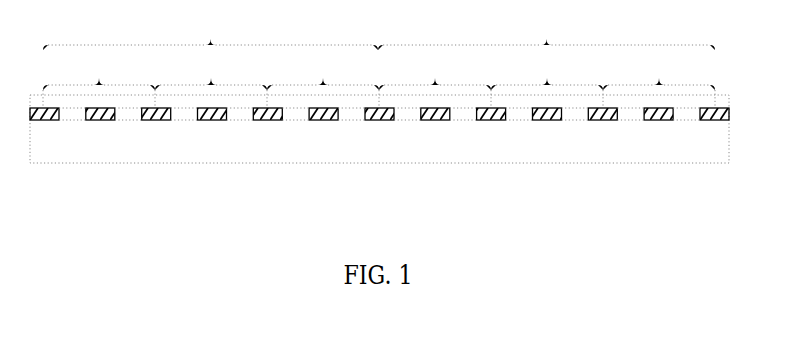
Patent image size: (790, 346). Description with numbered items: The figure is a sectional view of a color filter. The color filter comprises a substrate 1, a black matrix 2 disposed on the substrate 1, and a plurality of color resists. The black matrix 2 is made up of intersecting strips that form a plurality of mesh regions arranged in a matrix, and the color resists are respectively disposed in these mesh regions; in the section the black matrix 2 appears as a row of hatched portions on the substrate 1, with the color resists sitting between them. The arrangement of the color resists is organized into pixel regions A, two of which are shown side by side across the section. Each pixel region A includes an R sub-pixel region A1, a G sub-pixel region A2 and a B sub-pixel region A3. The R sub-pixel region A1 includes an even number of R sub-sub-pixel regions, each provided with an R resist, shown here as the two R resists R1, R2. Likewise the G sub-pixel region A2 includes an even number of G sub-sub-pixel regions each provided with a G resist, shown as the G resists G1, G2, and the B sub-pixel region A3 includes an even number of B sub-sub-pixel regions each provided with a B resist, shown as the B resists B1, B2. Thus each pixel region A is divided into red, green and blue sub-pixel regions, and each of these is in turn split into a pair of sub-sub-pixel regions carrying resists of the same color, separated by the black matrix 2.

The substrate 1 is at (129, 152).
The black matrix 2 is at (212, 121).
The pixel region A is at (379, 58).
The R sub-pixel region A1 is at (267, 80).
The G sub-pixel region A2 is at (379, 80).
The B sub-pixel region A3 is at (491, 80).
The R resist R1 is at (240, 110).
The R resist R2 is at (296, 110).
The G resist G1 is at (352, 110).
The G resist G2 is at (408, 110).
The B resist B1 is at (463, 110).
The B resist B2 is at (519, 110).